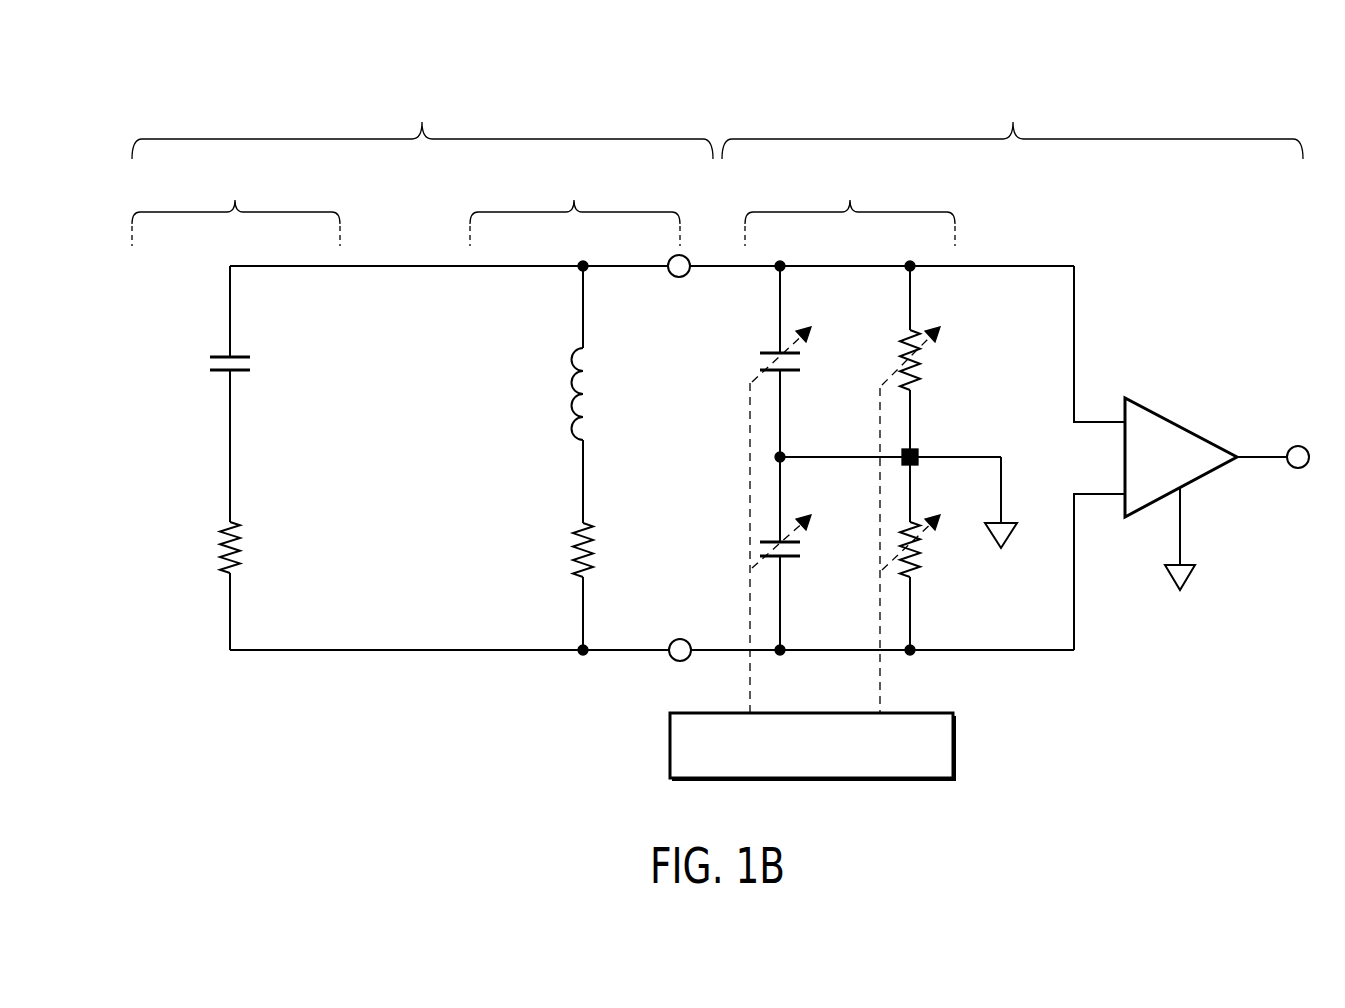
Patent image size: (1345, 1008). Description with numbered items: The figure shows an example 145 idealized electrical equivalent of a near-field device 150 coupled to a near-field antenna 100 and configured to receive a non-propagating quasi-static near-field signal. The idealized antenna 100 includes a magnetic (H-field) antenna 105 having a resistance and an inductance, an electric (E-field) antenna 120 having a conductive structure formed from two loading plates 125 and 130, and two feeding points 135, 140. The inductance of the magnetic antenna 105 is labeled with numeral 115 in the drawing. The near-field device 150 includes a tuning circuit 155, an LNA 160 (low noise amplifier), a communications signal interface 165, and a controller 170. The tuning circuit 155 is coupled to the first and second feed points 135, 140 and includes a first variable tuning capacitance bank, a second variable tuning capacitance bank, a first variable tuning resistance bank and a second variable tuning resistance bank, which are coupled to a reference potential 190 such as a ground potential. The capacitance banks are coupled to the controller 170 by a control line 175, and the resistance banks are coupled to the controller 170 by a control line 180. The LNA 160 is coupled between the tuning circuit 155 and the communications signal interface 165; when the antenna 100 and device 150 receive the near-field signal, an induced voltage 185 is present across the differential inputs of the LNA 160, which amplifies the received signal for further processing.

The example idealized electrical equivalent 145 is at (160, 110).
The near-field antenna 100 is at (422, 126).
The near-field device 150 is at (1012, 126).
The electric (E-field) antenna 120 is at (236, 412).
The loading plate 125 is at (238, 350).
The loading plate 130 is at (240, 376).
The magnetic (H-field) antenna 105 is at (575, 415).
The inductor L1 115 is at (584, 394).
The feeding point 135 is at (680, 278).
The feeding point 140 is at (680, 638).
The tuning circuit 155 is at (873, 415).
The control line 175 is at (750, 460).
The control line 180 is at (880, 408).
The induced voltage 185 is at (1057, 440).
The reference potential 190 is at (1006, 548).
The LNA (low noise amplifier) 160 is at (1183, 420).
The communications signal interface 165 is at (1298, 444).
The controller 170 is at (955, 748).